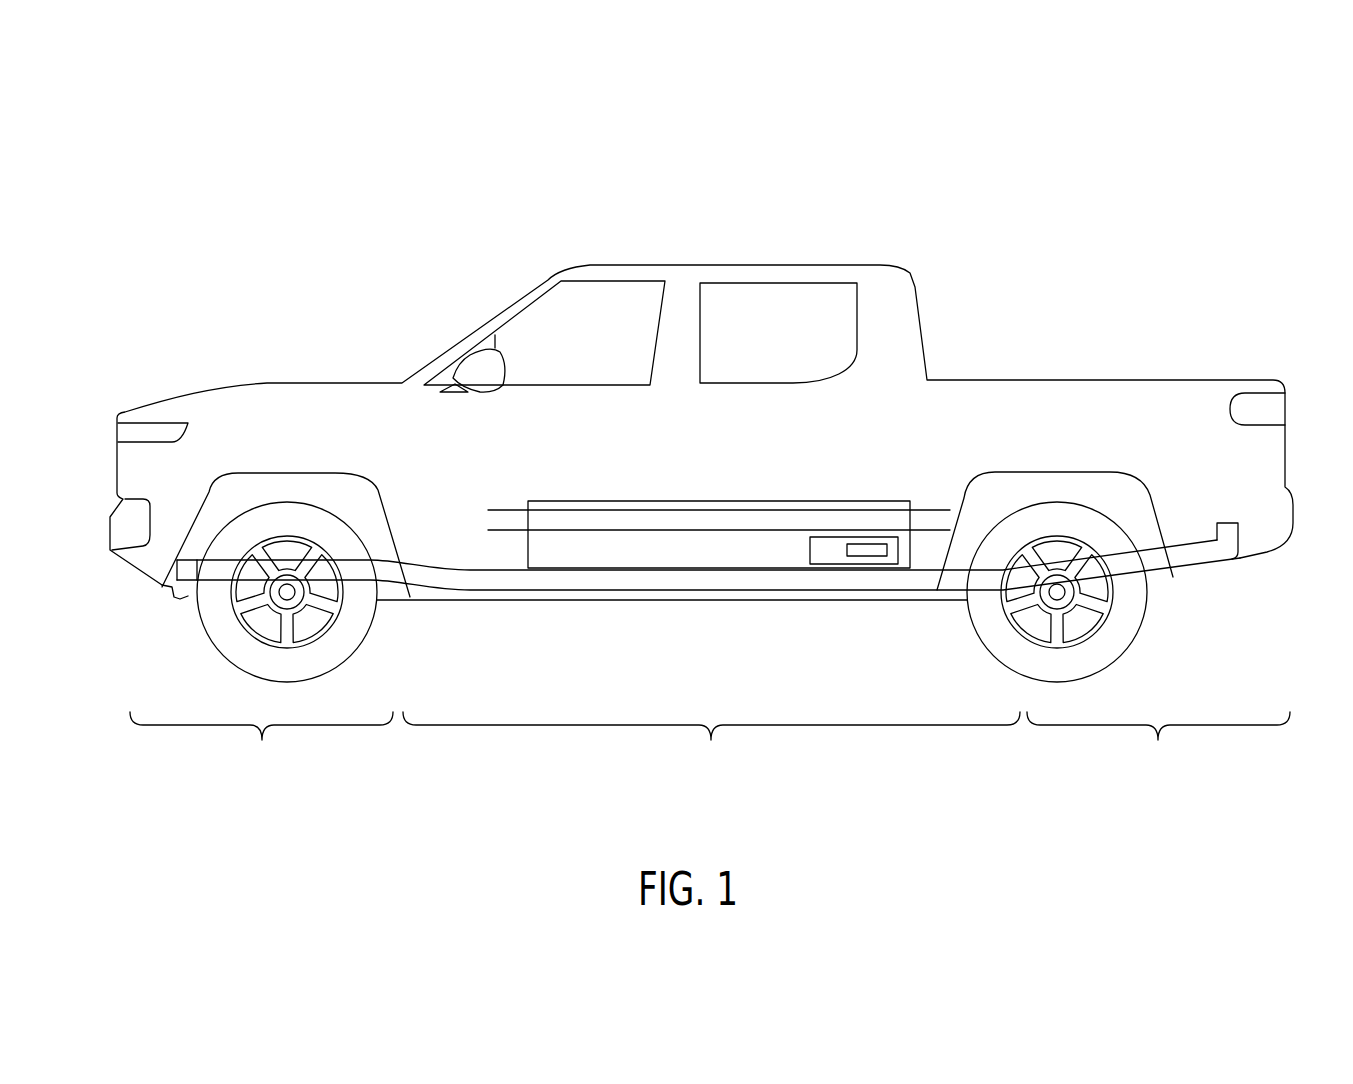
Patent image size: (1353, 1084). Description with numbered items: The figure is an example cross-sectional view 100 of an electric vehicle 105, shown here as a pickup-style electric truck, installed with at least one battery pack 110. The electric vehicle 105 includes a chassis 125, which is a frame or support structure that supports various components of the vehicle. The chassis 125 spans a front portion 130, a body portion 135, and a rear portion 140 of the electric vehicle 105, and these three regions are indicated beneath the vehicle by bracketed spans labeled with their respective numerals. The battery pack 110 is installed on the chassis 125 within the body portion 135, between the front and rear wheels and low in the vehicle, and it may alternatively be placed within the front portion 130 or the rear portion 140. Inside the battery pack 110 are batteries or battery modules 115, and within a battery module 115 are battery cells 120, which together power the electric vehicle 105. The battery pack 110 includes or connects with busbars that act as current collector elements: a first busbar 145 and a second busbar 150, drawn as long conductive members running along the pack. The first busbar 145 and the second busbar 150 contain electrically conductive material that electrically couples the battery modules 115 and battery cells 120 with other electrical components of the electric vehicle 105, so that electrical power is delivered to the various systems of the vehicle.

The cross-sectional view 100 is at (330, 185).
The electric vehicle 105 is at (637, 250).
The battery pack 110 is at (732, 490).
The battery module 115 is at (887, 566).
The battery cell 120 is at (868, 562).
The chassis 125 is at (189, 545).
The front portion 130 is at (261, 751).
The body portion 135 is at (711, 751).
The rear portion 140 is at (1158, 751).
The first busbar 145 is at (613, 502).
The second busbar 150 is at (570, 519).